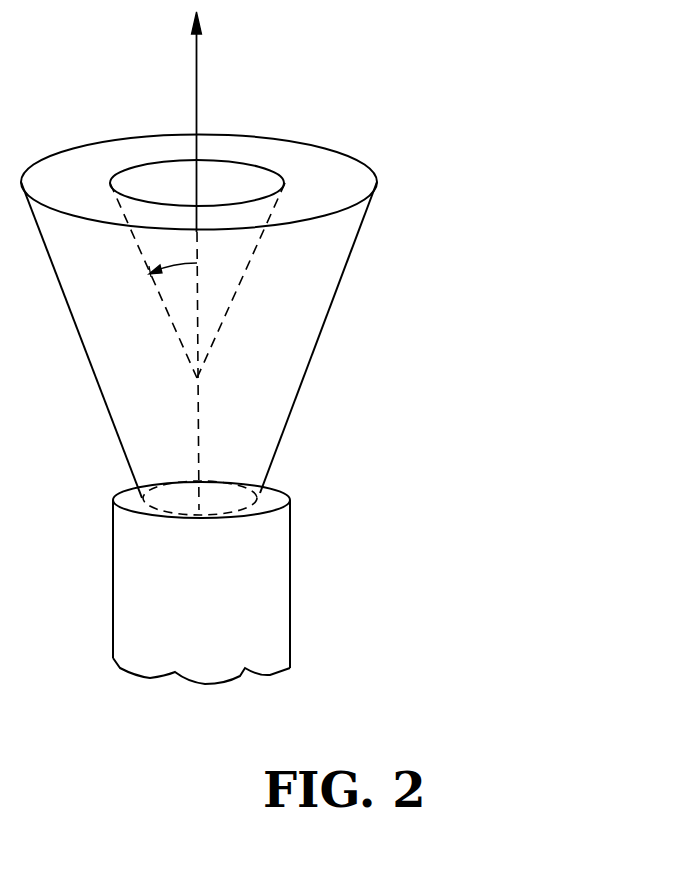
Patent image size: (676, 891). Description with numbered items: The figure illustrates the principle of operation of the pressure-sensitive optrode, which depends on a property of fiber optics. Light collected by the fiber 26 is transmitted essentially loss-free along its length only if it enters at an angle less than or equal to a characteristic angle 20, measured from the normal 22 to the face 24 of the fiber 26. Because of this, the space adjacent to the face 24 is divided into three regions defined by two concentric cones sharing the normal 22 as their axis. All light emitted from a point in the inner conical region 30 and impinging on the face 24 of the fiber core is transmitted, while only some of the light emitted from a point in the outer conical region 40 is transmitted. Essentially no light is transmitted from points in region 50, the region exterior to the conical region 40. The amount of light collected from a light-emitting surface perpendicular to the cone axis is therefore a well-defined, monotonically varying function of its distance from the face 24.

The characteristic angle 20 is at (183, 266).
The normal 22 is at (198, 62).
The face 24 is at (222, 497).
The fiber 26 is at (290, 608).
The region 30 is at (257, 163).
The region 40 is at (368, 165).
The region 50 is at (435, 333).